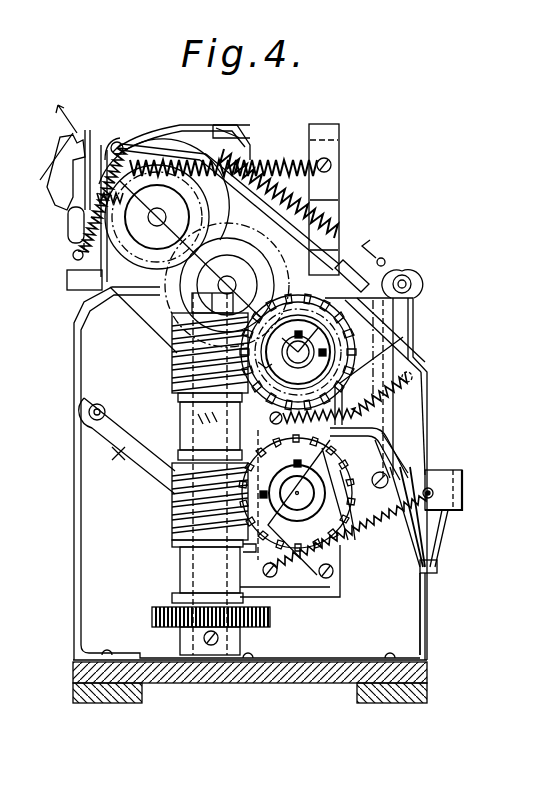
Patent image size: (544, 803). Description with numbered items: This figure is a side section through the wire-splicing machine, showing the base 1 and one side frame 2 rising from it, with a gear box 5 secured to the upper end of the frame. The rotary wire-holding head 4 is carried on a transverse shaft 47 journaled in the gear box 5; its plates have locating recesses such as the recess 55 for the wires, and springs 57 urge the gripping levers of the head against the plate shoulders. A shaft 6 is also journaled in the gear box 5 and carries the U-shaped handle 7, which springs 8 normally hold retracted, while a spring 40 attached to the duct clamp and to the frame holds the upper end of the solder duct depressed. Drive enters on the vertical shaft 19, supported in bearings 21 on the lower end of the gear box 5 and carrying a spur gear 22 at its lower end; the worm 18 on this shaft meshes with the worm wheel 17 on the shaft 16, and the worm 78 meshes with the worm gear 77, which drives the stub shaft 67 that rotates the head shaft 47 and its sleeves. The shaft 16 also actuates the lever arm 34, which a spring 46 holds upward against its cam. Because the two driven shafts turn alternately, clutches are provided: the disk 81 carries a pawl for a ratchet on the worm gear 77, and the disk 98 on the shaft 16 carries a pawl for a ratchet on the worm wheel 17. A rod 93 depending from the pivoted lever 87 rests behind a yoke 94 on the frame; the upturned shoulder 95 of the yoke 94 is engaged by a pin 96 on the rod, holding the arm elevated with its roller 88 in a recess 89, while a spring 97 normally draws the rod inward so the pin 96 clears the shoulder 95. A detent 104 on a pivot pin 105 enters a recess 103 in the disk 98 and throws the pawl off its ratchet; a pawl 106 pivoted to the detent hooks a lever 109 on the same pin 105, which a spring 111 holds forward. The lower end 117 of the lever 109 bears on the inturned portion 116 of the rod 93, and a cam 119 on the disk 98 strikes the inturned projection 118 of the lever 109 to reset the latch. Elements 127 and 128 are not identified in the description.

The base 1 is at (283, 684).
The side frame 2 is at (74, 519).
The rotary wire-holding head 4 is at (75, 175).
The gear box 5 is at (136, 305).
The shaft 6 is at (385, 250).
The yoke or handle 7 is at (340, 180).
The spring 8 is at (293, 158).
The shaft 16 is at (297, 493).
The worm wheel 17 is at (356, 542).
The worm 18 is at (172, 519).
The vertical shaft 19 is at (190, 555).
The bearing 21 is at (180, 416).
The spur gear 22 is at (152, 614).
The lever arm 34 is at (130, 458).
The spring 40 is at (339, 194).
The spring 46 is at (410, 410).
The transverse shaft 47 is at (190, 214).
The recess 55 is at (101, 406).
The spring 57 is at (72, 255).
The stub shaft 67 is at (217, 274).
The worm gear 77 is at (414, 292).
The worm 78 is at (172, 352).
The disk 81 is at (410, 340).
The pivoted lever 87 is at (386, 265).
The roller 88 is at (268, 300).
The recess 89 is at (365, 400).
The rod 93 is at (427, 390).
The yoke 94 is at (455, 470).
The upturned shoulder 95 is at (442, 545).
The pin 96 is at (450, 512).
The spring 97 is at (410, 550).
The disk 98 is at (255, 549).
The recess 103 is at (297, 493).
The detent 104 is at (416, 450).
The pivot pin 105 is at (418, 462).
The pawl 106 is at (412, 437).
The lever 109 is at (412, 520).
The spring 111 is at (212, 474).
The inturned extreme portion 116 is at (436, 574).
The lower end 117 is at (420, 582).
The inturned projection 118 is at (294, 464).
The cam 119 is at (338, 580).
The bracket arm 127 is at (122, 140).
The spring 128 is at (78, 212).